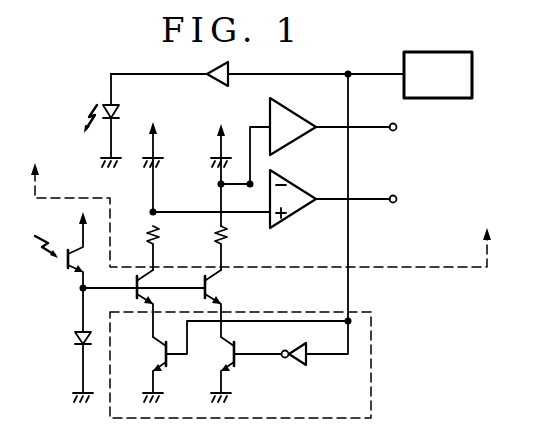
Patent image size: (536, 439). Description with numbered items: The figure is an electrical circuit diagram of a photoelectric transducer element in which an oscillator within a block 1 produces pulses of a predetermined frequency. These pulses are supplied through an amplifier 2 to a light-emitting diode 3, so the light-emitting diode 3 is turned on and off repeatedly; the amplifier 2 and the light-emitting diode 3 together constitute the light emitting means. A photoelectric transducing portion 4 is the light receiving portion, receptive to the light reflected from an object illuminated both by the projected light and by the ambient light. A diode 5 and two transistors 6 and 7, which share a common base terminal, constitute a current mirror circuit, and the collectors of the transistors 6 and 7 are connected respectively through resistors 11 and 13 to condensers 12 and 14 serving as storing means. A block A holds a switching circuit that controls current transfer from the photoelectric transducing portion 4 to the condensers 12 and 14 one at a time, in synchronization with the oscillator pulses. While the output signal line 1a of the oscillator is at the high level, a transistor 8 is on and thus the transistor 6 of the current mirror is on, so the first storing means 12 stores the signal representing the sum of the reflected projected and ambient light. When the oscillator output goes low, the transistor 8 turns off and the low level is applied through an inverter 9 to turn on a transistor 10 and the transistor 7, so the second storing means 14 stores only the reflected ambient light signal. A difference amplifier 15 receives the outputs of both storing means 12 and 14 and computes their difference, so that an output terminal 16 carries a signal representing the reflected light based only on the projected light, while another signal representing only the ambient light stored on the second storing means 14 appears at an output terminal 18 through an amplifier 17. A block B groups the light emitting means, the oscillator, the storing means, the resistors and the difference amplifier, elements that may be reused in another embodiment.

The block containing oscillator OSC 1 is at (440, 99).
The output signal line of the oscillator 1a is at (349, 168).
The amplifier 2 is at (221, 86).
The light-emitting diode 3 is at (108, 103).
The photoelectric transducing portion 4 is at (74, 272).
The diode 5 is at (75, 336).
The transistor 6 is at (135, 297).
The transistor 7 is at (218, 291).
The transistor 8 is at (158, 354).
The inverter 9 is at (292, 366).
The transistor 10 is at (228, 366).
The resistor 11 is at (147, 236).
The condenser (first storing means) 12 is at (146, 161).
The resistor 13 is at (230, 240).
The condenser (second storing means) 14 is at (212, 161).
The difference amplifier 15 is at (302, 212).
The output terminal 16 is at (398, 203).
The amplifier 17 is at (300, 109).
The output terminal 18 is at (398, 130).
The block (switching circuit) A is at (373, 381).
The block B is at (455, 172).